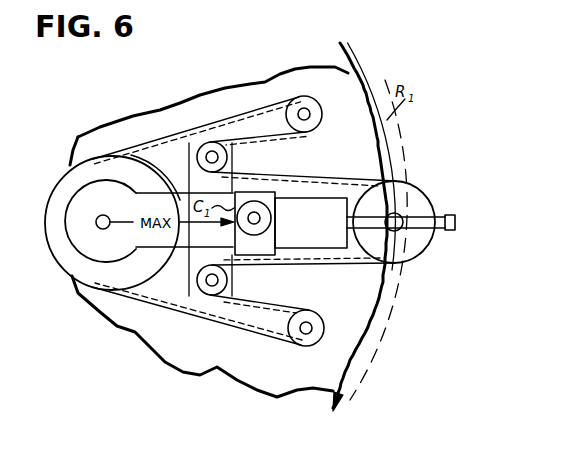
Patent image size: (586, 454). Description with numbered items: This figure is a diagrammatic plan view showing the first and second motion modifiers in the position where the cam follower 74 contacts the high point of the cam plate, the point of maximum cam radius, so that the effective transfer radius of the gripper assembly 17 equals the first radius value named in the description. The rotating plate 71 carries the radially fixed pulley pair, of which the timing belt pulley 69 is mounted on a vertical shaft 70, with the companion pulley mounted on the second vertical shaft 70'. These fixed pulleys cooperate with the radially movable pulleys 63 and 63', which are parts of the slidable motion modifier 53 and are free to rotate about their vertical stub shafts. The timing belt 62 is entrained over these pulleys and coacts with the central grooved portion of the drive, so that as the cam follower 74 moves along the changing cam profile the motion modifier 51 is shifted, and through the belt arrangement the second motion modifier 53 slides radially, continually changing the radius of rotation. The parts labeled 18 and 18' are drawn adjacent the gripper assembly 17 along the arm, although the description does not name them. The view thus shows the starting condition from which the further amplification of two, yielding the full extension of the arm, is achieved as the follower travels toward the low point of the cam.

The gripper assembly 17 is at (422, 222).
The drive shaft housing 18 is at (360, 223).
The shaft end 18' is at (478, 232).
The motion modifier 51 is at (262, 247).
The slidable motion modifier 53 is at (213, 198).
The timing belt 62 is at (313, 176).
The pulley 63 is at (196, 119).
The pulley 63' is at (200, 308).
The timing belt pulley 69 is at (300, 110).
The vertical shaft 70 is at (325, 122).
The vertical shaft 70' is at (294, 348).
The rotating plate 71 is at (218, 347).
The cam follower 74 is at (252, 225).